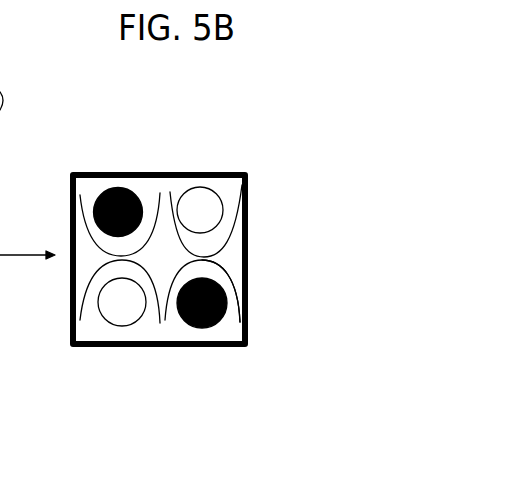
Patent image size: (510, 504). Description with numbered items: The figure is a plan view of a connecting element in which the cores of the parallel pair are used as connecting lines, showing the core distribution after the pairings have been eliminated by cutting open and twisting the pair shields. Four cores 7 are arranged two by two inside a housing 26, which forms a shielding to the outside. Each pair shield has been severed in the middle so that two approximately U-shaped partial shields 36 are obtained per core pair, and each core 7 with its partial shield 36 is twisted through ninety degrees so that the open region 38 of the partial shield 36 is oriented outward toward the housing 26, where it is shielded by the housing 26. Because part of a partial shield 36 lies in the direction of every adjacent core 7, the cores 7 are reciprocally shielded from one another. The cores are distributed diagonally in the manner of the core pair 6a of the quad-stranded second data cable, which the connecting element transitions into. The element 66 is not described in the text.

The housing 26 is at (187, 346).
The partial shield 36 is at (88, 232).
The open region 38 is at (98, 192).
The core pair 6a is at (120, 193).
The fiber bore 66 is at (202, 213).
The core 7 is at (213, 280).